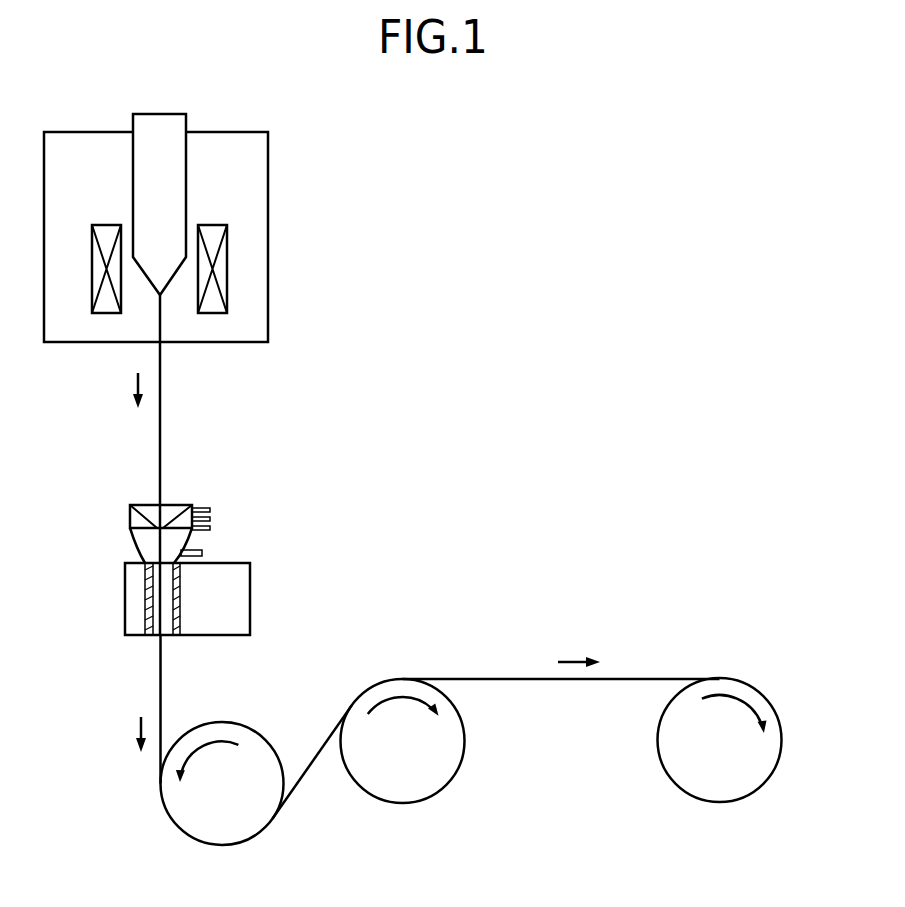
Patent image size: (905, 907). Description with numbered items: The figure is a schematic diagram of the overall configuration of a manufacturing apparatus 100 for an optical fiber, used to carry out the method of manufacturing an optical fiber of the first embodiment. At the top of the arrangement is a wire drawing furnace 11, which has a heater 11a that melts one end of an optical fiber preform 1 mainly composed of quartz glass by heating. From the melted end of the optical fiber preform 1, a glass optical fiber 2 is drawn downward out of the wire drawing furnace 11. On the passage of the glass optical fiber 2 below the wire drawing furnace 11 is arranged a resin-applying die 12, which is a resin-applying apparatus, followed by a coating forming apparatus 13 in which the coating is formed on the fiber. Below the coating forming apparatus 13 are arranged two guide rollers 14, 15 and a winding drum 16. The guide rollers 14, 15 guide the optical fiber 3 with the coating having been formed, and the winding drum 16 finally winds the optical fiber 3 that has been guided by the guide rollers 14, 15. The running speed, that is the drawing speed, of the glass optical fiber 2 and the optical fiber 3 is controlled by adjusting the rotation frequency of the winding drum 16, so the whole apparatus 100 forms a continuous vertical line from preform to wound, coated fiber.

The manufacturing apparatus 100 is at (458, 174).
The optical fiber preform 1 is at (186, 119).
The wire drawing furnace 11 is at (288, 188).
The heater 11a is at (227, 268).
The glass optical fiber 2 is at (160, 427).
The resin-applying die 12 is at (130, 520).
The coating forming apparatus 13 is at (282, 568).
The optical fiber 3 is at (160, 687).
The guide roller 14 is at (230, 722).
The guide roller 15 is at (462, 768).
The winding drum 16 is at (778, 765).